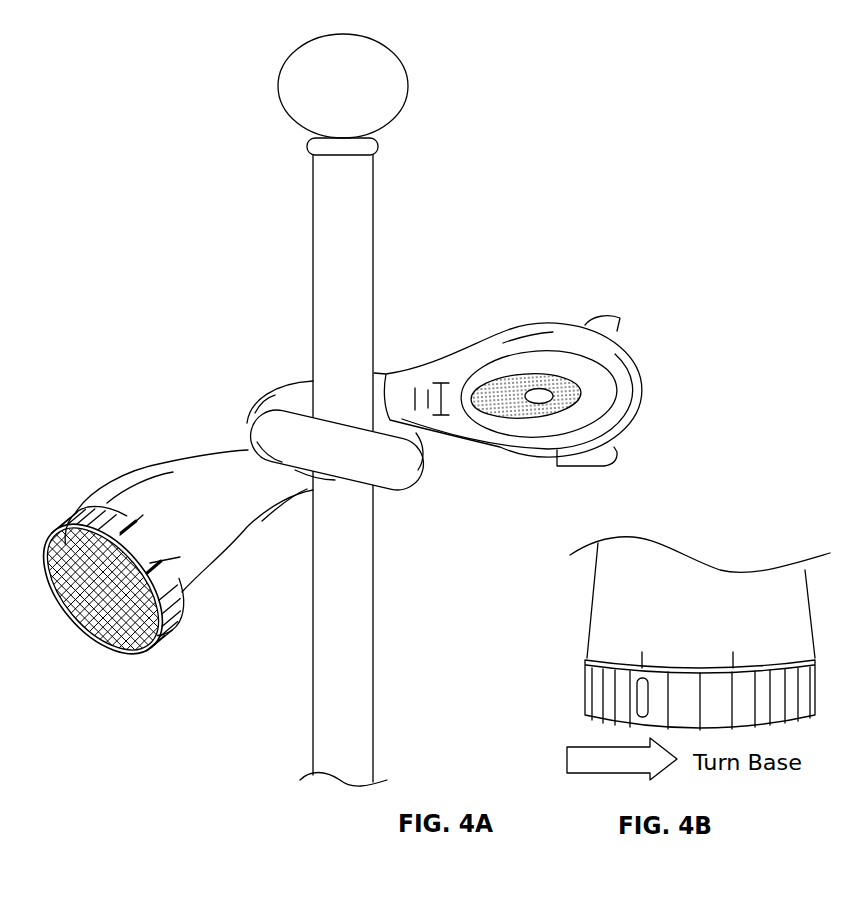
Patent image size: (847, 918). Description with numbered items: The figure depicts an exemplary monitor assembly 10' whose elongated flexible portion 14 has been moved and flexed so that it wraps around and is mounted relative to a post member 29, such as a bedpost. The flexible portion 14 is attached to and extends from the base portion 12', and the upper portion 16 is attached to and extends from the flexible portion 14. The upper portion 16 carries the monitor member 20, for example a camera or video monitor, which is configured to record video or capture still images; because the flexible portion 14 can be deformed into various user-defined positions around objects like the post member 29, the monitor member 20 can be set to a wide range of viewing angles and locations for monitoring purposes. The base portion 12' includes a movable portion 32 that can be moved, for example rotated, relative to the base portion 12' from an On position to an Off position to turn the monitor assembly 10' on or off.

In FIG. 4A, the monitor assembly 10' is at (330, 358).
In FIG. 4A, the post member 29 is at (322, 186).
In FIG. 4A, the elongated flexible portion 14 is at (292, 398).
In FIG. 4A, the upper portion 16 is at (470, 360).
In FIG. 4A, the monitor member 20 is at (541, 389).
In FIG. 4A, the base portion 12' is at (194, 500).
In FIG. 4B, the base portion 12' is at (686, 602).
In FIG. 4A, the movable portion 32 is at (72, 516).
In FIG. 4B, the movable portion 32 is at (598, 694).